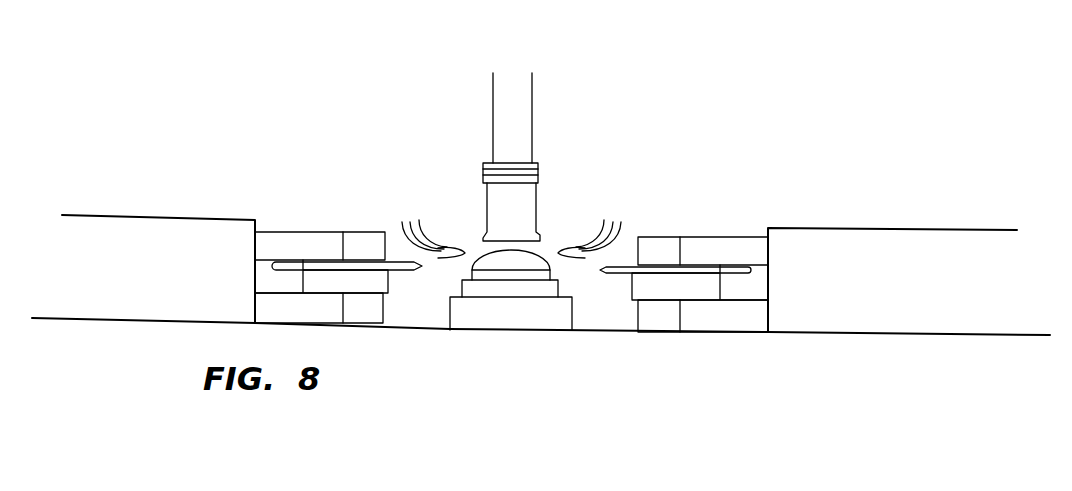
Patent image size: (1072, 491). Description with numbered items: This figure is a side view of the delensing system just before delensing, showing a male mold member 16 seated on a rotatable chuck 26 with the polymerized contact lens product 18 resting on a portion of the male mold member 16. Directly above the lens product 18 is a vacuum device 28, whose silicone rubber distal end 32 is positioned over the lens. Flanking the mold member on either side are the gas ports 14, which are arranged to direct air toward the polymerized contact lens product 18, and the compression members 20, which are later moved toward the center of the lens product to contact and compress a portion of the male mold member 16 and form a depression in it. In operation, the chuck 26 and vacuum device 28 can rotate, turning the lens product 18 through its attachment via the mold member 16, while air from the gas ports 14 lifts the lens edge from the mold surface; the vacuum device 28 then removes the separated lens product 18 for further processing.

The gas port 14 is at (438, 258).
The male mold member 16 is at (523, 274).
The polymerized contact lens product 18 is at (508, 250).
The compression member 20 is at (393, 258).
The rotatable chuck 26 is at (497, 312).
The vacuum device 28 is at (533, 80).
The silicone rubber distal end 32 is at (527, 240).